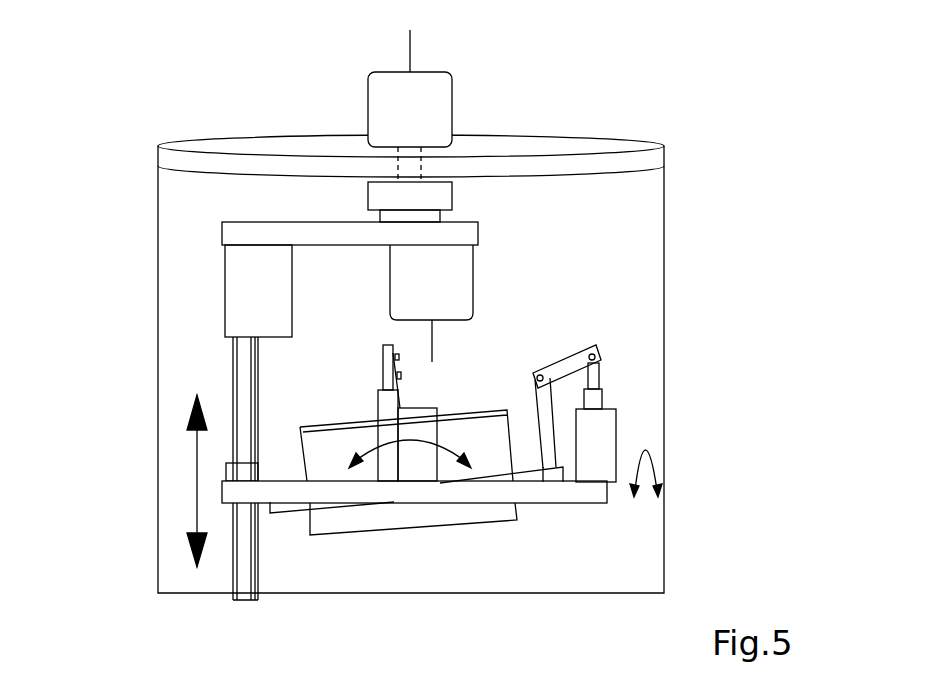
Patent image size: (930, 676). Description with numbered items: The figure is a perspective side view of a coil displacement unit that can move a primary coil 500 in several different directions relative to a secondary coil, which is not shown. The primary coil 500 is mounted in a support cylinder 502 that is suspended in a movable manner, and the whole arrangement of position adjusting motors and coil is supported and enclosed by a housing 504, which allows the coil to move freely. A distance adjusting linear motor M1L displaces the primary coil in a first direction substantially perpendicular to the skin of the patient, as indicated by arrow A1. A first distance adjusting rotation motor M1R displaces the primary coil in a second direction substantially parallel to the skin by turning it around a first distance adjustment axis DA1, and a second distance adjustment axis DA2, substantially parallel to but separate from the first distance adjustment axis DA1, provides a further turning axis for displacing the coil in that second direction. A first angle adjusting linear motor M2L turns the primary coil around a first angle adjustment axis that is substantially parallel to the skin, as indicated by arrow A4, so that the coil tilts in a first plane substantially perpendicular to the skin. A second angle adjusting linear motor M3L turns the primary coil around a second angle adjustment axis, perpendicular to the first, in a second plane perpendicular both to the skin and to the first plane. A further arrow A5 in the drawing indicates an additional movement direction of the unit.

The first distance adjustment axis DA1 is at (445, 38).
The first distance adjusting rotation motor M1R is at (452, 100).
The housing 504 is at (664, 211).
The distance adjusting linear motor M1L is at (225, 290).
The second distance adjustment axis DA2 is at (465, 342).
The arrow A4 is at (408, 438).
The second angle adjusting linear motor M3L is at (422, 408).
The first angle adjusting linear motor M2L is at (603, 437).
The arrow A1 is at (195, 477).
The tilting movement A5 is at (657, 465).
The primary coil 500 is at (455, 530).
The support cylinder 502 is at (373, 517).